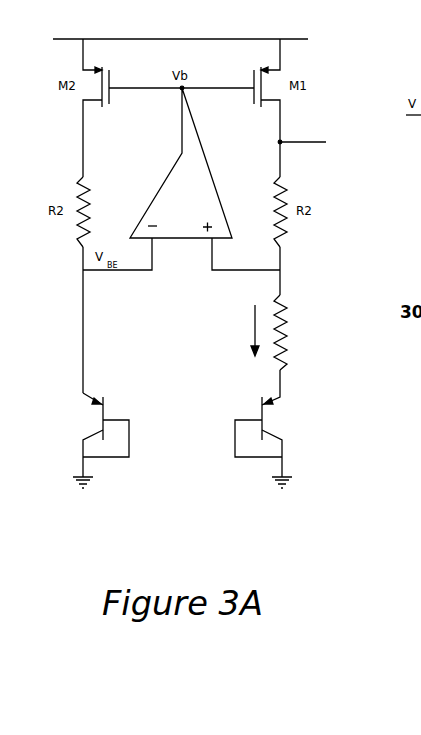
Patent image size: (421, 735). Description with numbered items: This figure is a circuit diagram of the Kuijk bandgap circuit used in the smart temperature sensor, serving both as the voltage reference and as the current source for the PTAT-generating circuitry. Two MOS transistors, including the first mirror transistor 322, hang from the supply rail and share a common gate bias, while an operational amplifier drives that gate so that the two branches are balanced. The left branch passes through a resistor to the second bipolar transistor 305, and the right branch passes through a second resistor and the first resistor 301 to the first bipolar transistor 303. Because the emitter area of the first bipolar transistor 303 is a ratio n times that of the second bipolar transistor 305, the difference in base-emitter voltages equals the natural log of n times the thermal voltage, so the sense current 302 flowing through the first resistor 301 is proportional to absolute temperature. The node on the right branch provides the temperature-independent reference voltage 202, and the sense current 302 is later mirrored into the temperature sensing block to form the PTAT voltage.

The M1 transistor 322 is at (312, 70).
The reference voltage 202 is at (321, 118).
The resistor R1 301 is at (313, 316).
The I1 current 302 is at (225, 320).
The transistor Q1 303 is at (300, 421).
The transistor Q2 305 is at (63, 412).